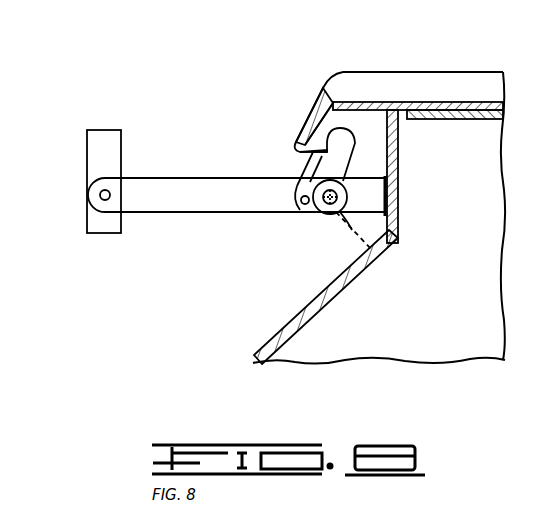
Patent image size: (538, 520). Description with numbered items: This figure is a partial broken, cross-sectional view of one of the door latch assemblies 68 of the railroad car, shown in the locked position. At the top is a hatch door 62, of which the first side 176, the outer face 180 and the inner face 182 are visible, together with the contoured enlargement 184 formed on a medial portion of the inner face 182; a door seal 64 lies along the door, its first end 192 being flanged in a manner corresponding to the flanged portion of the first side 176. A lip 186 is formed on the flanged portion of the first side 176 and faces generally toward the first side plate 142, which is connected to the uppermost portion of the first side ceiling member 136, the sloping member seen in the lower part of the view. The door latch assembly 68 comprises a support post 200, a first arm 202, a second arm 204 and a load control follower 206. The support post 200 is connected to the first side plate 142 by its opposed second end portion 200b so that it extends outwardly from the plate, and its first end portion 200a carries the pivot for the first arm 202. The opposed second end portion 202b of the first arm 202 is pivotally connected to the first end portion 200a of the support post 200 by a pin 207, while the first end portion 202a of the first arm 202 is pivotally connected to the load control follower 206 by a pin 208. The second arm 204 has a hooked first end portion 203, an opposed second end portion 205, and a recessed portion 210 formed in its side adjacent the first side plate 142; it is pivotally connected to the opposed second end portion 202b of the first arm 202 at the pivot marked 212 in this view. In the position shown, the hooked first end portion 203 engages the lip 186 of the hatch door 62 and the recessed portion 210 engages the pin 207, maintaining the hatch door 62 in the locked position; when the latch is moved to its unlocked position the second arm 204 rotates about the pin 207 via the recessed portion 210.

The hatch door 62 is at (439, 103).
The door seal 64 is at (409, 80).
The door latch assembly 68 is at (198, 82).
The first side ceiling member 136 is at (299, 320).
The first side plate 142 is at (400, 150).
The first side 176 is at (304, 138).
The outer face 180 is at (371, 100).
The inner face 182 is at (318, 100).
The contoured enlargement 184 is at (453, 112).
The lip 186 is at (298, 152).
The first end 192 is at (312, 114).
The support post 200 is at (378, 184).
The first end portion 200a is at (376, 250).
The opposed second end portion 200b is at (398, 240).
The first arm 202 is at (200, 205).
The first end portion 202a is at (105, 212).
The opposed second end portion 202b is at (382, 195).
The hooked first end portion 203 is at (350, 160).
The second arm 204 is at (322, 158).
The opposed second end portion 205 is at (310, 215).
The load control follower 206 is at (205, 140).
The pin 207 is at (365, 205).
The pin 208 is at (100, 195).
The recessed portion 210 is at (385, 180).
The link pin 212 is at (300, 200).